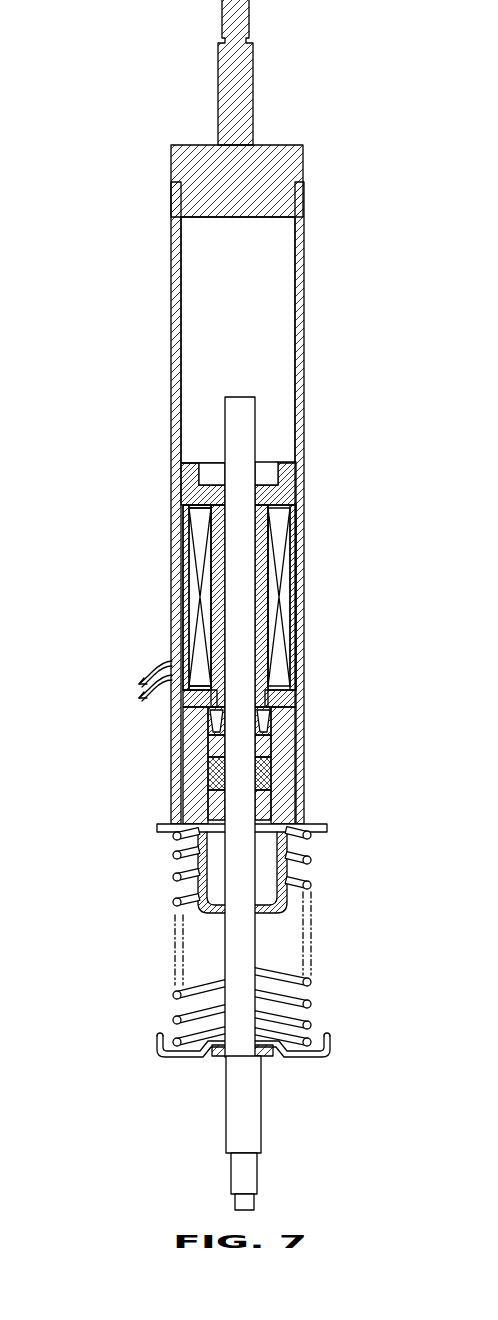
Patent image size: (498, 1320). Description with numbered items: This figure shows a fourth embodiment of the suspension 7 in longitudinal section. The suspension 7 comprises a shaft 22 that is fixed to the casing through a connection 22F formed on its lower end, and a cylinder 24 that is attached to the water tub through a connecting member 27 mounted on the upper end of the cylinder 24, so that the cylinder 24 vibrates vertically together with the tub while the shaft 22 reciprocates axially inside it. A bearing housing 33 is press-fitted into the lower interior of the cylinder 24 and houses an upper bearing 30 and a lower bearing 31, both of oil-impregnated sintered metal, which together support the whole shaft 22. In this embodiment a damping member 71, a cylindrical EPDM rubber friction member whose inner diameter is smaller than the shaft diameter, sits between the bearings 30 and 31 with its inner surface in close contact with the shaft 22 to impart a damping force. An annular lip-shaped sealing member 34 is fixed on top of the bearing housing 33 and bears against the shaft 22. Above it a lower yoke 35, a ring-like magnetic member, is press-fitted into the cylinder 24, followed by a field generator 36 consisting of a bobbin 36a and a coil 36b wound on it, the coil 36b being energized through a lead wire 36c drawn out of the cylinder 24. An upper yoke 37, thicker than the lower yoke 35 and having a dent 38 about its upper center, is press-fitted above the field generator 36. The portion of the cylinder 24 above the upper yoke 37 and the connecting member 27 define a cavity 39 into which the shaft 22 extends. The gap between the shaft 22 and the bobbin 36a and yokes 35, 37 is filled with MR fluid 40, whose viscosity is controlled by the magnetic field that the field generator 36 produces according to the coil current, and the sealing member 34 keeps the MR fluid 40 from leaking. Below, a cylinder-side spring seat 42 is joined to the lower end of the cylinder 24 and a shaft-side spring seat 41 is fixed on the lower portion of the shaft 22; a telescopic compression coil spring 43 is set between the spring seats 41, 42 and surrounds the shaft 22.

The suspension 7 is at (128, 186).
The connecting member 27 is at (219, 92).
The cylinder 24 is at (172, 379).
The cavity 39 is at (238, 340).
The dent 38 is at (268, 463).
The upper yoke 37 is at (293, 485).
The field generator 36 is at (300, 628).
The bobbin 36a is at (183, 603).
The coil 36b is at (200, 612).
The lead wire 36c is at (150, 672).
The MR fluid 40 is at (280, 576).
The lower yoke 35 is at (293, 697).
The sealing member 34 is at (268, 721).
The bearing housing 33 is at (290, 770).
The bearing 30 is at (210, 743).
The damping member 71 is at (210, 773).
The bearing 31 is at (210, 798).
The cylinder-side spring seat 42 is at (158, 829).
The coil spring 43 is at (176, 900).
The shaft 22 is at (225, 947).
The shaft-side spring seat 41 is at (160, 1056).
The connection 22F is at (230, 1181).